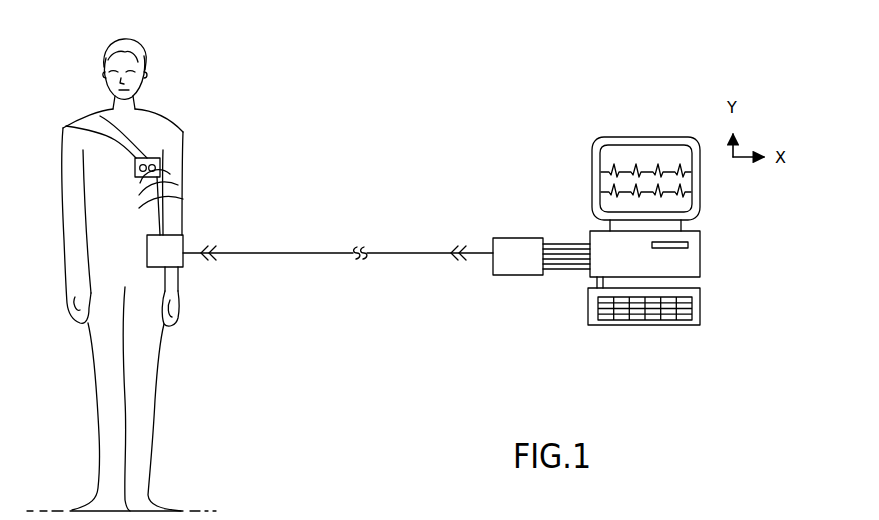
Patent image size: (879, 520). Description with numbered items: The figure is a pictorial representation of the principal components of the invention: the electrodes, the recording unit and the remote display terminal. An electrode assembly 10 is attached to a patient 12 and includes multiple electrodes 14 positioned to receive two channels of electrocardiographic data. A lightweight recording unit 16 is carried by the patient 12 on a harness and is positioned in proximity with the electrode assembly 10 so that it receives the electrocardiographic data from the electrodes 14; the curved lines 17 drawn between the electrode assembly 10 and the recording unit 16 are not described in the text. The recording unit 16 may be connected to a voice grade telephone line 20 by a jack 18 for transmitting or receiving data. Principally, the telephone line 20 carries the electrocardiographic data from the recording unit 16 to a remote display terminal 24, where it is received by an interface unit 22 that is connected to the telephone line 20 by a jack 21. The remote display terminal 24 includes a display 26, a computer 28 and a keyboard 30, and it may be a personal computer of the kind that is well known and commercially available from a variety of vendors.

The electrode assembly 10 is at (158, 158).
The patient 12 is at (162, 104).
The electrodes 14 is at (100, 116).
The recording unit 16 is at (184, 235).
The signal waves 17 is at (194, 184).
The jack 18 is at (210, 272).
The voice grade telephone line 20 is at (306, 218).
The jack 21 is at (453, 265).
The interface unit 22 is at (520, 238).
The remote display terminal 24 is at (582, 117).
The display 26 is at (650, 137).
The computer 28 is at (700, 263).
The keyboard 30 is at (700, 318).